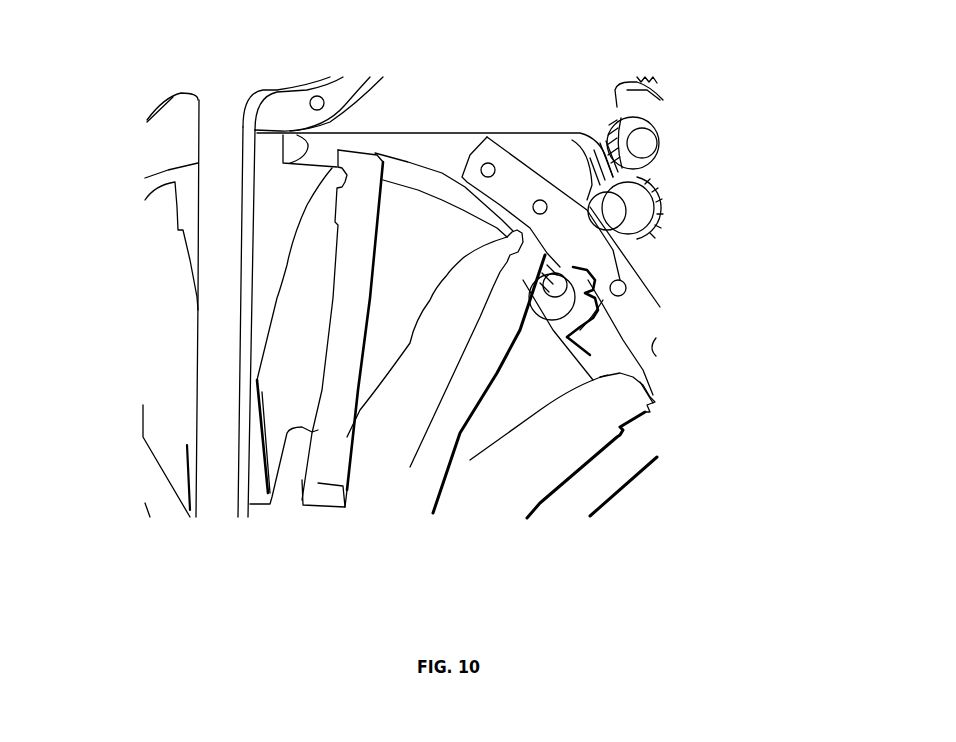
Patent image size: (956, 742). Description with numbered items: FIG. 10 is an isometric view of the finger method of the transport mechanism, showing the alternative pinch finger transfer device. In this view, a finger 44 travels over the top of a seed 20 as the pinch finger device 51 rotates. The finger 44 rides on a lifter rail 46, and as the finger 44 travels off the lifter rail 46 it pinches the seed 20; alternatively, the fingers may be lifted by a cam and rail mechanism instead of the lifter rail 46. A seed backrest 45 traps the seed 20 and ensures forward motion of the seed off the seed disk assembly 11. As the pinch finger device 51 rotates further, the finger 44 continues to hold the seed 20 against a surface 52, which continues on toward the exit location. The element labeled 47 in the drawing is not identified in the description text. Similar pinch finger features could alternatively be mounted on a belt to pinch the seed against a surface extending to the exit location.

The seed disk assembly 11 is at (523, 24).
The seed 20 is at (550, 273).
The finger 44 is at (463, 383).
The seed backrest 45 is at (487, 273).
The lifter rail 46 is at (425, 183).
The pivot pin 47 is at (607, 302).
The pinch finger device 51 is at (393, 327).
The surface 52 is at (620, 362).